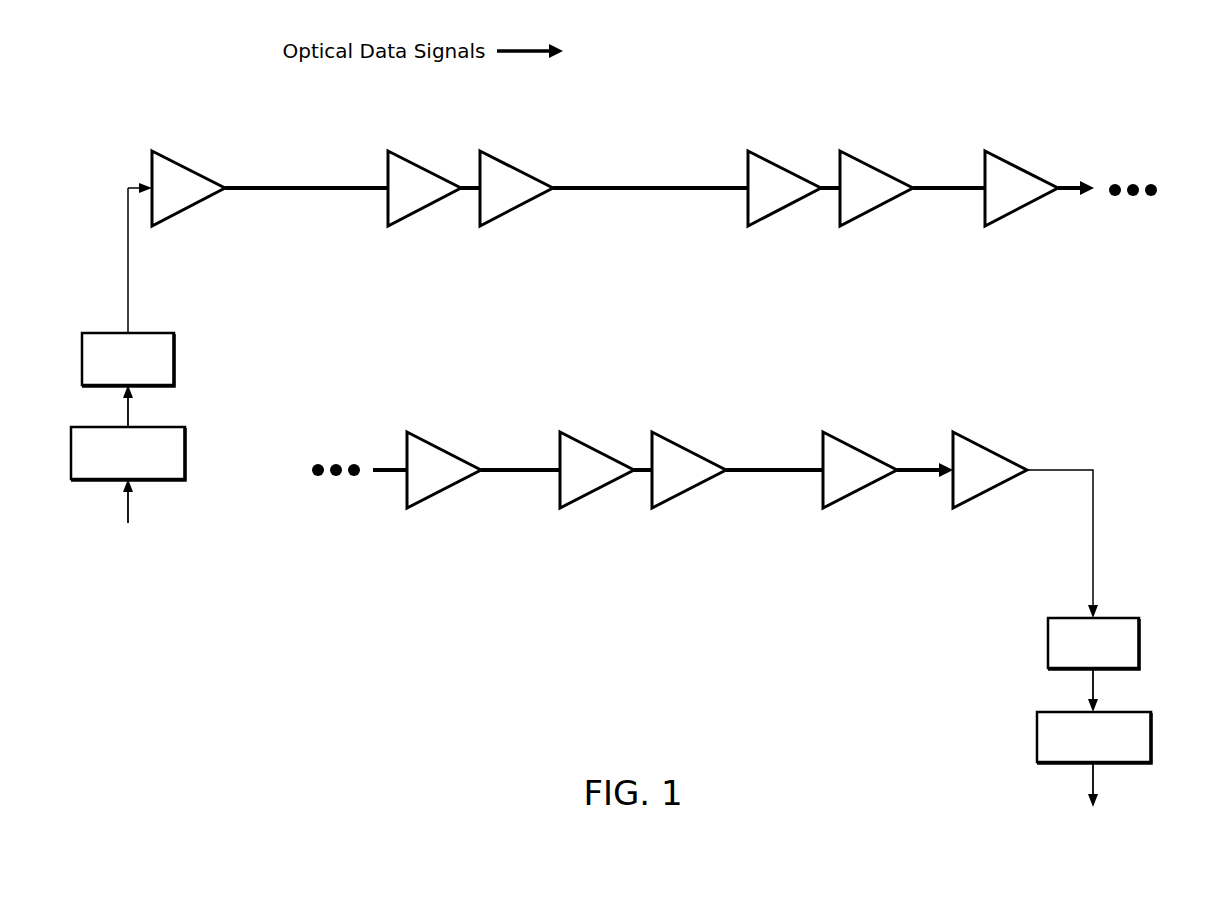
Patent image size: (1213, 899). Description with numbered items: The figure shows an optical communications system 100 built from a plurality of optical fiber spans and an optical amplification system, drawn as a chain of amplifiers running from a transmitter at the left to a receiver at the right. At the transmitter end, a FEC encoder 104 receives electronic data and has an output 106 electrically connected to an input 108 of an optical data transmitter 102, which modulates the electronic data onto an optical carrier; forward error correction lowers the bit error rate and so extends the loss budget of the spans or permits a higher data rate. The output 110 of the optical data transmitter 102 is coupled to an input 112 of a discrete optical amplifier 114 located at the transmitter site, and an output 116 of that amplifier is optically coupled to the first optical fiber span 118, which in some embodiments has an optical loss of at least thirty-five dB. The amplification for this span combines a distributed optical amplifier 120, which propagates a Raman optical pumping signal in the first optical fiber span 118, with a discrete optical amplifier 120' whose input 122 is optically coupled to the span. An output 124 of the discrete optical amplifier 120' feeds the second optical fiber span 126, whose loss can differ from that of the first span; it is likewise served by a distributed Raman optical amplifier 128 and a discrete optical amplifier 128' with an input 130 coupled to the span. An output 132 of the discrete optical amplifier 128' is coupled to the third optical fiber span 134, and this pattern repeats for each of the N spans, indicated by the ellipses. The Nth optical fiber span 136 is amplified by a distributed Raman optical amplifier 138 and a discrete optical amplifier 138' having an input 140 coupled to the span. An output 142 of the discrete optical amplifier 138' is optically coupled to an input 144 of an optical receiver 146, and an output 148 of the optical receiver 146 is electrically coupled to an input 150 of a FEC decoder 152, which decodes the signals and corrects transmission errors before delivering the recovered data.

The optical communications system 100 is at (1141, 77).
The optical data transmitter 102 is at (175, 360).
The FEC encoder 104 is at (161, 480).
The output 106 is at (128, 427).
The input 108 is at (122, 387).
The output 110 is at (128, 333).
The input 112 is at (144, 183).
The discrete optical amplifier 114 is at (192, 170).
The output 116 is at (228, 187).
The first optical fiber span 118 is at (353, 191).
The distributed optical amplifier 120 is at (424, 170).
The discrete optical amplifier 120' is at (519, 180).
The input 122 is at (477, 182).
The output 124 is at (554, 193).
The second optical fiber span 126 is at (715, 193).
The distributed Raman optical amplifier 128 is at (784, 170).
The discrete optical amplifier 128' is at (876, 180).
The input 130 is at (837, 182).
The output 132 is at (914, 192).
The third optical fiber span 134 is at (957, 186).
The Nth optical fiber span 136 is at (791, 475).
The distributed Raman optical amplifier 138 is at (860, 454).
The discrete optical amplifier 138' is at (992, 461).
The input 140 is at (948, 465).
The output 142 is at (1031, 474).
The input 144 is at (1097, 614).
The optical receiver 146 is at (1140, 645).
The output 148 is at (1089, 672).
The input 150 is at (1097, 707).
The FEC decoder 152 is at (1127, 765).